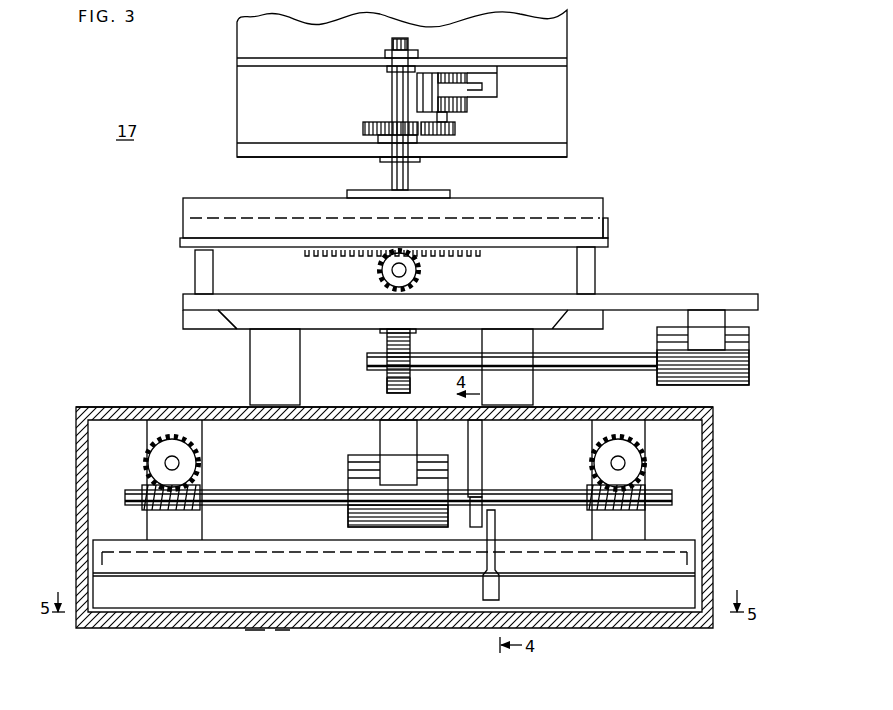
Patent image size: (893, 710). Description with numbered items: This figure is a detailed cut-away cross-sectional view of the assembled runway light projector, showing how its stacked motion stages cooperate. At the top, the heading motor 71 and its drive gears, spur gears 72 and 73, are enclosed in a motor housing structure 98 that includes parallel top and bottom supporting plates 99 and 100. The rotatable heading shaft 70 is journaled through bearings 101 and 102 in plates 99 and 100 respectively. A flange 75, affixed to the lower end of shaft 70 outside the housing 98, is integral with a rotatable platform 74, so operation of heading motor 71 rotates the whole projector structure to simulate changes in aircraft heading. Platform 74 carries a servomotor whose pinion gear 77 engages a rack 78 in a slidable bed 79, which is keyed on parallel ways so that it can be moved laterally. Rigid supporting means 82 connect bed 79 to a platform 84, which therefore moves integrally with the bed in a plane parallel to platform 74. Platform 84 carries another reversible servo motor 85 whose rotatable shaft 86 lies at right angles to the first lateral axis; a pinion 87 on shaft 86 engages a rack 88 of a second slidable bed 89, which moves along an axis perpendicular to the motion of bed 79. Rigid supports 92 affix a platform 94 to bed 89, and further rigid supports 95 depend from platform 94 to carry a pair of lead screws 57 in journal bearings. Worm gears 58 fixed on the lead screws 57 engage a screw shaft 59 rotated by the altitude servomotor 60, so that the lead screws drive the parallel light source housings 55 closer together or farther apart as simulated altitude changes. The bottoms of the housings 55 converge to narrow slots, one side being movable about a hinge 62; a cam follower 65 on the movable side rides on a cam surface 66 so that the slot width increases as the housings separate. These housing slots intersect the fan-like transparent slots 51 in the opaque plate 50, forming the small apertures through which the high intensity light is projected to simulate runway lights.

The opaque plate 50 is at (100, 630).
The transparent slots 51 is at (330, 630).
The light source housings 55 is at (700, 565).
The lead screws 57 is at (200, 472).
The worm gears 58 is at (222, 447).
The screw shaft 59 is at (255, 486).
The reversible servomotor 60 is at (356, 465).
The hinge 62 is at (242, 578).
The cam follower 65 is at (478, 535).
The cam surface 66 is at (475, 455).
The shaft 70 is at (392, 90).
The reversible servomotor 71 is at (456, 107).
The spur gear 72 is at (455, 128).
The spur gear 73 is at (363, 128).
The platform 74 is at (588, 198).
The flange 75 is at (432, 190).
The pinion gear 77 is at (422, 272).
The rack 78 is at (360, 258).
The slidable bed 79 is at (608, 244).
The rigid supporting means 82 is at (196, 270).
The platform 84 is at (650, 296).
The reversible servo motor 85 is at (749, 348).
The rotatable shaft 86 is at (585, 360).
The pinion 87 is at (390, 378).
The rack 88 is at (385, 335).
The slidable bed 89 is at (242, 326).
The rigid supports 92 is at (252, 377).
The platform 94 is at (130, 407).
The rigid supports 95 is at (146, 432).
The motor housing structure 98 is at (570, 96).
The top supporting plate 99 is at (508, 62).
The bottom supporting plate 100 is at (508, 153).
The bearing 101 is at (386, 53).
The bearing 102 is at (380, 161).